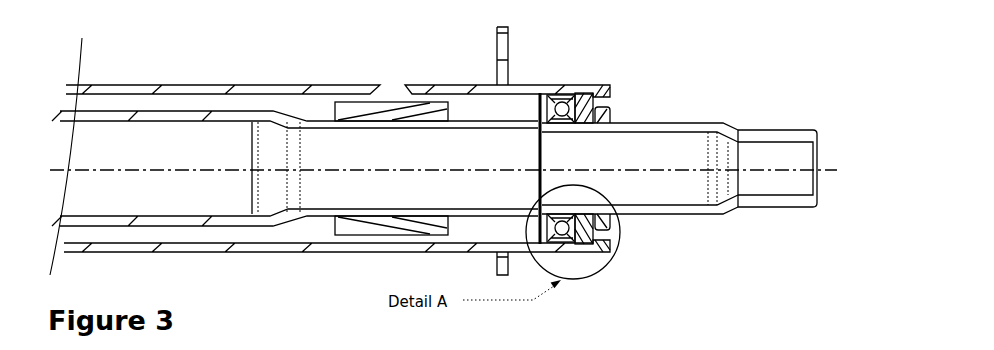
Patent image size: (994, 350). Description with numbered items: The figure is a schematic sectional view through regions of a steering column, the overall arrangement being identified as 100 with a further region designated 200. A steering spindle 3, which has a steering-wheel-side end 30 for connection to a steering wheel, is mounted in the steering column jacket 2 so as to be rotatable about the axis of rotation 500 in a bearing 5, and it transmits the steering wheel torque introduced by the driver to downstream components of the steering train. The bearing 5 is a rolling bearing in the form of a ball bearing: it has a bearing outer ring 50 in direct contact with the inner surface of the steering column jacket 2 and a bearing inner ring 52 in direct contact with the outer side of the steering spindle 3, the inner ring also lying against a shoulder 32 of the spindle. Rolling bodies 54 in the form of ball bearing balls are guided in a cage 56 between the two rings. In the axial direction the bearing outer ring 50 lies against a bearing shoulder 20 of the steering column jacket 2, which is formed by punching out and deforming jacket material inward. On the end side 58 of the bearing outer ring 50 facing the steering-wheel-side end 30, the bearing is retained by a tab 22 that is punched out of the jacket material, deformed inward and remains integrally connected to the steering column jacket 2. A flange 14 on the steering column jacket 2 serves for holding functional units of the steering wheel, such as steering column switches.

The surgical tool assembly 100 is at (234, 126).
The steering column jacket 2 is at (443, 92).
The steering spindle 3 is at (190, 110).
The bearing 5 is at (577, 108).
The flange 14 is at (503, 72).
The bearing shoulder 20 is at (507, 243).
The tab 22 is at (583, 257).
The steering-wheel-side end 30 is at (758, 137).
The shoulder 32 is at (540, 92).
The bearing outer ring 50 is at (555, 97).
The bearing inner ring 52 is at (577, 222).
The rolling bodies 54 is at (610, 93).
The cage 56 is at (612, 112).
The end side 58 is at (479, 343).
The handpiece 200 is at (544, 344).
The axis of rotation 500 is at (763, 170).